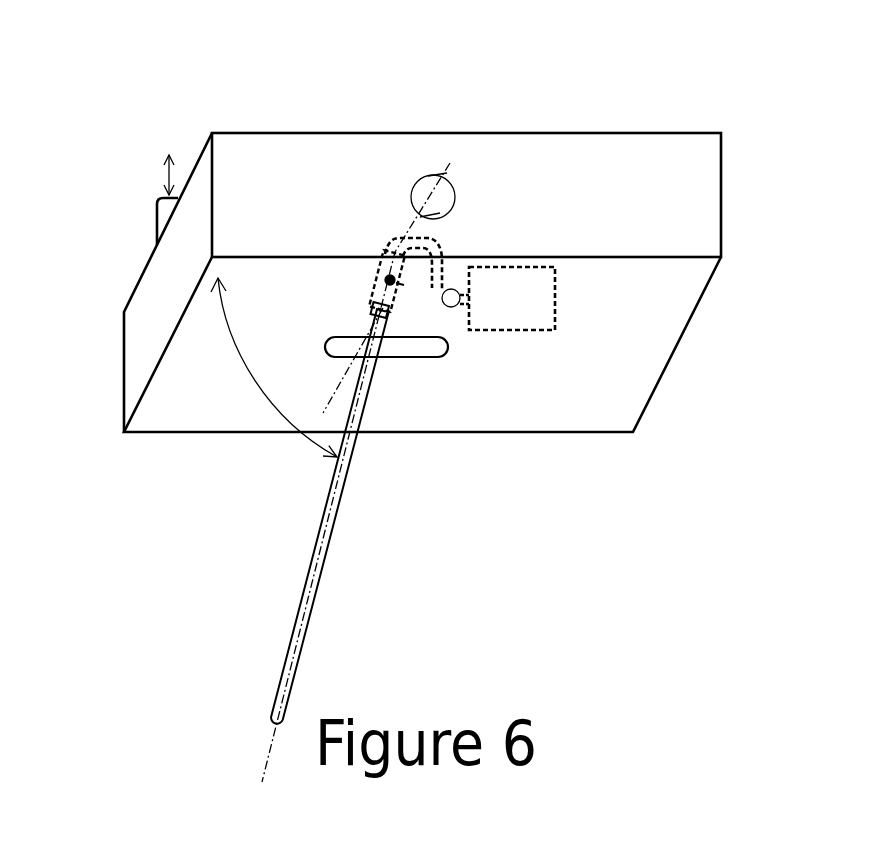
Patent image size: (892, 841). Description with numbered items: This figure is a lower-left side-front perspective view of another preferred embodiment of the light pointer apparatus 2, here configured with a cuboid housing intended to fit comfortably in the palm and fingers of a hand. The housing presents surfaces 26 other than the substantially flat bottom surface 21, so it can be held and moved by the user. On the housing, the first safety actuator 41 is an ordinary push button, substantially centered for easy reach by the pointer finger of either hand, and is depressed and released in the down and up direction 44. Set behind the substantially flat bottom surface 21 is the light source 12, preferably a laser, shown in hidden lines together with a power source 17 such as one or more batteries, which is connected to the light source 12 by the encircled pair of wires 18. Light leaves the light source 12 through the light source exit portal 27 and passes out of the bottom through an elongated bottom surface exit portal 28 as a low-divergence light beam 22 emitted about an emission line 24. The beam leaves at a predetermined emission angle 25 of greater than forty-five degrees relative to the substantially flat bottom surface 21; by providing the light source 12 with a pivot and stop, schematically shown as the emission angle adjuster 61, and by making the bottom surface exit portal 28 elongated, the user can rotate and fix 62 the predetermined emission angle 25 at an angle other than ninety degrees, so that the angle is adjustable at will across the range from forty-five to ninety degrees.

The light pointer apparatus 2 is at (295, 78).
The light source 12 is at (387, 265).
The power source 17 is at (523, 295).
The pair of wires 18 is at (455, 289).
The substantially flat bottom surface 21 is at (285, 339).
The light beam 22 is at (288, 635).
The emission line 24 is at (268, 755).
The predetermined emission angle 25 is at (372, 308).
The surfaces 26 is at (322, 232).
The light source exit portal 27 is at (335, 340).
The bottom surface exit portal 28 is at (335, 355).
The first safety actuator 41 is at (156, 215).
The down and up direction 44 is at (162, 173).
The emission angle adjuster 61 is at (398, 282).
The rotate and fix 62 is at (412, 182).